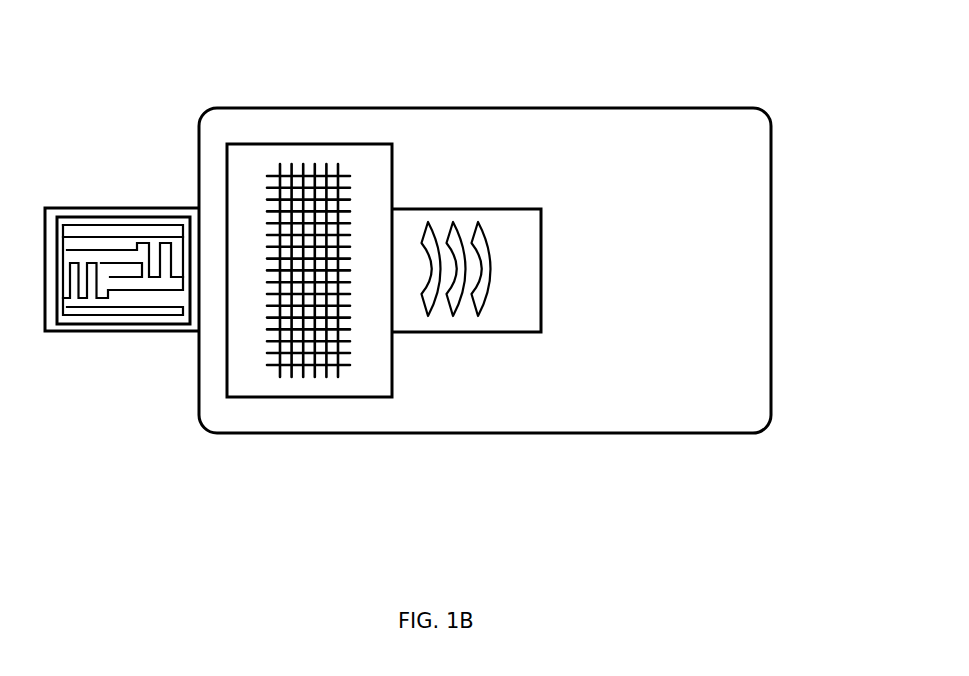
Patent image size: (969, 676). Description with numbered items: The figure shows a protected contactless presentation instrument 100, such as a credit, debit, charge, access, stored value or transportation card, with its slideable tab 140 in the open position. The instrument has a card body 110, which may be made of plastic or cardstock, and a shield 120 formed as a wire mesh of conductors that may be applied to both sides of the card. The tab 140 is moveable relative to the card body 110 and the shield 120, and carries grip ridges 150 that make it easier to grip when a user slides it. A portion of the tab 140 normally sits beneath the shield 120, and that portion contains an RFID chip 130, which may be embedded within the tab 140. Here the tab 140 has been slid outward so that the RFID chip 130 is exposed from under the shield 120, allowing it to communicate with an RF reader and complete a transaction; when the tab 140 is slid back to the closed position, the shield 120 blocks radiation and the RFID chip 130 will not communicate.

The protected contactless presentation instrument 100 is at (498, 523).
The card body 110 is at (485, 237).
The shield 120 is at (335, 232).
The RFID chip 130 is at (112, 309).
The tab 140 is at (521, 266).
The grip ridges 150 is at (518, 234).